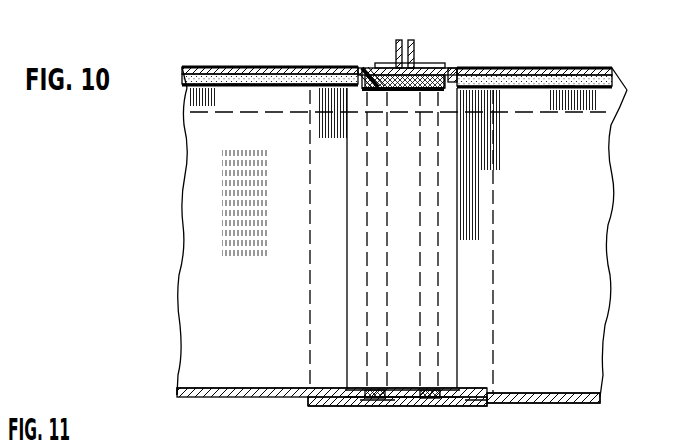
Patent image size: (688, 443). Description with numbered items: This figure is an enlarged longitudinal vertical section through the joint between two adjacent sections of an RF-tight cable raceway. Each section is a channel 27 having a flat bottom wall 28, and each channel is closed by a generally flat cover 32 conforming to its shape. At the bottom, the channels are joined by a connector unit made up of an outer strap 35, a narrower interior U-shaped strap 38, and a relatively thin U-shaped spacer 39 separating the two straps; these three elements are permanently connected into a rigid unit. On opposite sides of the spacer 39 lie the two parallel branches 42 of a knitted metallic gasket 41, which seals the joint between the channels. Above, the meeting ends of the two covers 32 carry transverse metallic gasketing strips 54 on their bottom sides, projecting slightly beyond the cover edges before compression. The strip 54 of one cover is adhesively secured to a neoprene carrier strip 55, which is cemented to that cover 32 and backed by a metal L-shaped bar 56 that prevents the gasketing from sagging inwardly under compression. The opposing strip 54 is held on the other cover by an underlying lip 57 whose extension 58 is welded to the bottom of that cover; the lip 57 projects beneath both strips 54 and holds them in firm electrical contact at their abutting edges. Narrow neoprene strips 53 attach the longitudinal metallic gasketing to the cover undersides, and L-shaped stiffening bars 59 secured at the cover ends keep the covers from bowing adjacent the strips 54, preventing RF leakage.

The channel 27 is at (200, 249).
The flat bottom wall 28 is at (258, 394).
The cover 32 is at (304, 69).
The outer strap 35 is at (480, 406).
The interior U-shaped strap 38 is at (438, 390).
The U-shaped spacer 39 is at (400, 406).
The metallic gasket 41 is at (380, 405).
The branches 42 is at (375, 388).
The strips of neoprene foam 53 is at (237, 76).
The transverse metallic gasketing strips 54 is at (390, 74).
The neoprene carrier strip 55 is at (366, 68).
The L-shaped bar 56 is at (356, 88).
The lip 57 is at (396, 92).
The extension 58 is at (457, 70).
The L-shaped stiffening bars 59 is at (407, 40).